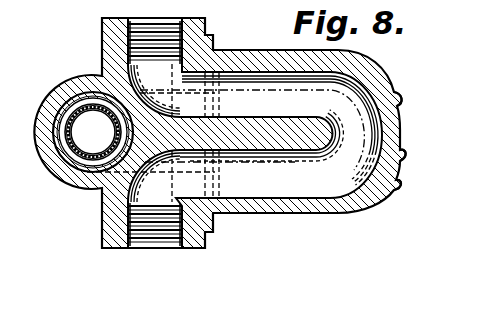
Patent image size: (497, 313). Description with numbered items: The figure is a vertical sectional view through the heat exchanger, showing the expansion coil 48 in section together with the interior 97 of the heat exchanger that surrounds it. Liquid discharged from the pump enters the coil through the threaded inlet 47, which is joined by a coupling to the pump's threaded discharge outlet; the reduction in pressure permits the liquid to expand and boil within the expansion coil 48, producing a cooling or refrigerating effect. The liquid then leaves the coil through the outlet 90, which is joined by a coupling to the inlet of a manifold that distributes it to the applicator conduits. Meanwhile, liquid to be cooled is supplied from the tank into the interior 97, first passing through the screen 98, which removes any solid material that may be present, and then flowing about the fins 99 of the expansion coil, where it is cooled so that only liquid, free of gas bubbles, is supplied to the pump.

The threaded inlet 47 is at (135, 20).
The expansion coil 48 is at (313, 215).
The outlet 90 is at (128, 247).
The interior 97 is at (50, 103).
The screen 98 is at (72, 157).
The fins 99 is at (401, 152).